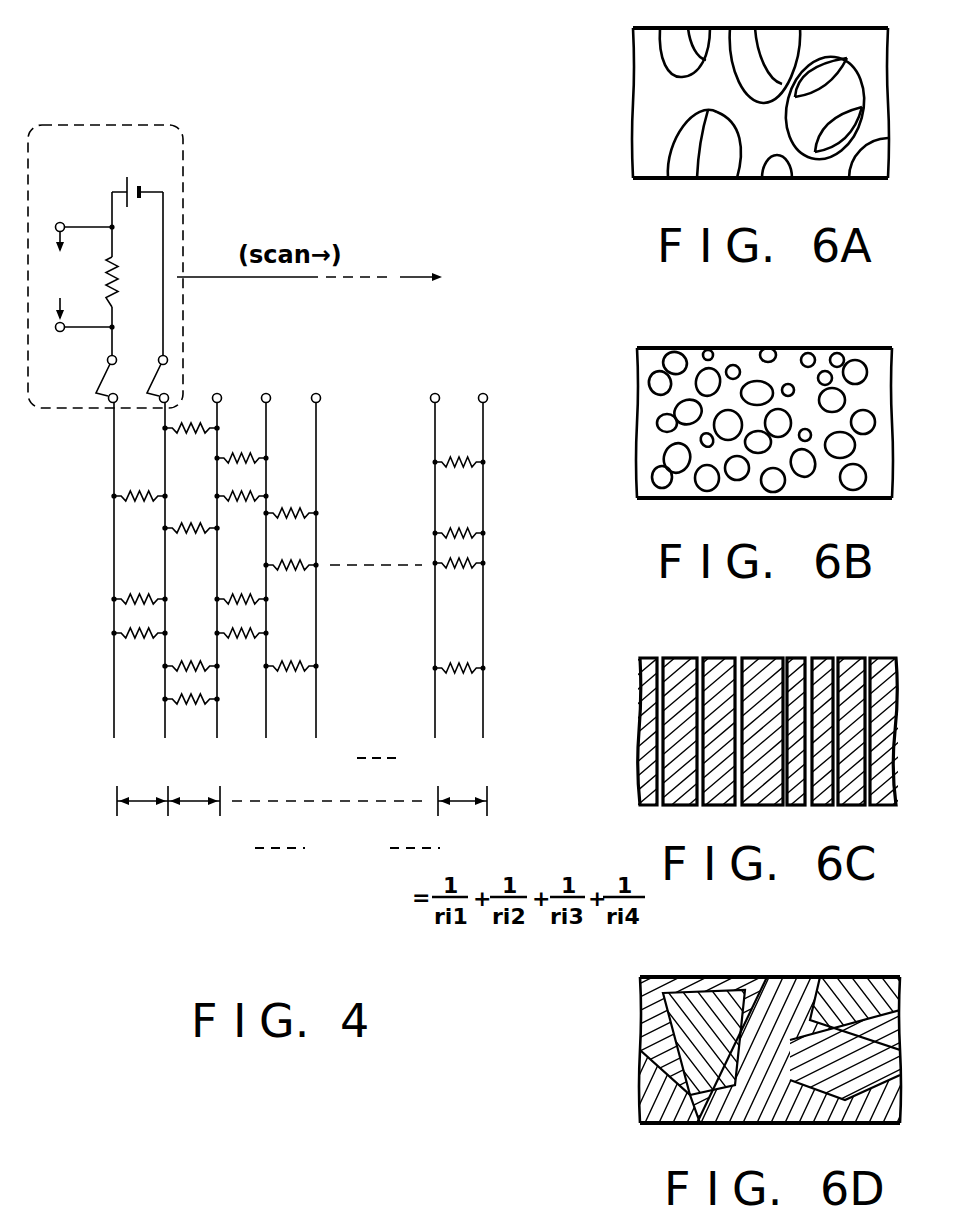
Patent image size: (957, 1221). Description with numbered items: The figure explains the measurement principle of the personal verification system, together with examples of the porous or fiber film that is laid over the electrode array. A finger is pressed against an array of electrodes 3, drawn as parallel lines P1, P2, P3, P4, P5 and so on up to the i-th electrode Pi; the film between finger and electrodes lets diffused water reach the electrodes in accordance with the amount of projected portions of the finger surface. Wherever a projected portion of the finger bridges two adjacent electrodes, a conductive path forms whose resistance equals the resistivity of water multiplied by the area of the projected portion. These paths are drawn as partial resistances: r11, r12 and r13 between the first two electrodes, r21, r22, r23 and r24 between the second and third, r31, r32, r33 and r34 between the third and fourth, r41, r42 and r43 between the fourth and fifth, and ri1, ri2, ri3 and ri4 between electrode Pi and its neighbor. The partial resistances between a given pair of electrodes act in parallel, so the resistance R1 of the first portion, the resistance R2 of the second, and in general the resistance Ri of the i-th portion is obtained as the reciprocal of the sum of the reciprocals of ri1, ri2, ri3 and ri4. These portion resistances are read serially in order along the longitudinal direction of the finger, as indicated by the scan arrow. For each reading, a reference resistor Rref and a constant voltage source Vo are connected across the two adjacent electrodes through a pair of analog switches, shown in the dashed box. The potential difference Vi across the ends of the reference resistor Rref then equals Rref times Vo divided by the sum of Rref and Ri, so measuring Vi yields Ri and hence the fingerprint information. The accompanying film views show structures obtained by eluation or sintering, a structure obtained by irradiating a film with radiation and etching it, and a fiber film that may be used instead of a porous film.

The electrodes 3 is at (302, 584).
The electrode P1 is at (117, 588).
The electrode P2 is at (169, 588).
The electrode P3 is at (222, 584).
The electrode P4 is at (271, 584).
The electrode P5 is at (320, 584).
The electrode Pi is at (438, 584).
The partial resistance r11 is at (141, 479).
The partial resistance r12 is at (141, 586).
The partial resistance r13 is at (141, 649).
The partial resistance r21 is at (192, 442).
The partial resistance r22 is at (192, 515).
The partial resistance r23 is at (192, 652).
The partial resistance r24 is at (192, 714).
The partial resistance r31 is at (243, 445).
The partial resistance r32 is at (243, 514).
The partial resistance r33 is at (243, 586).
The partial resistance r34 is at (243, 651).
The partial resistance r41 is at (292, 500).
The partial resistance r42 is at (292, 553).
The partial resistance r43 is at (292, 652).
The partial resistance ri1 is at (459, 447).
The partial resistance ri2 is at (459, 518).
The partial resistance ri3 is at (459, 579).
The partial resistance ri4 is at (459, 684).
The resistance between adjacent electrodes R1 is at (142, 806).
The resistance between adjacent electrodes R2 is at (195, 806).
The resistance between adjacent electrodes Ri is at (463, 806).
The potential difference Vi is at (81, 277).
The constant voltage source Vo is at (137, 176).
The reference resistor Rref is at (136, 273).